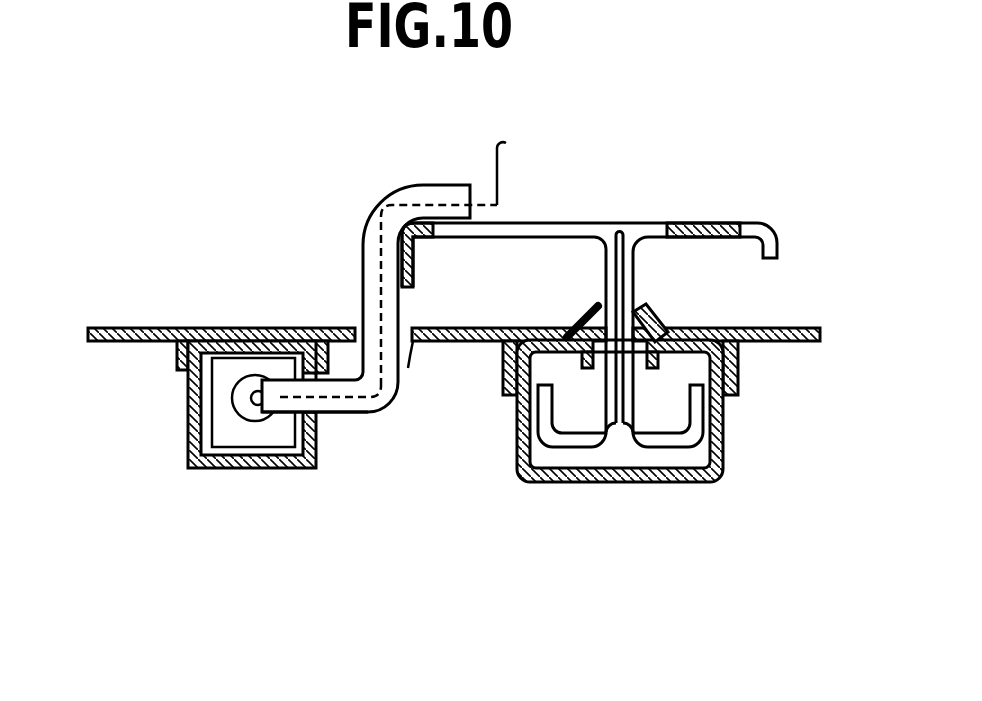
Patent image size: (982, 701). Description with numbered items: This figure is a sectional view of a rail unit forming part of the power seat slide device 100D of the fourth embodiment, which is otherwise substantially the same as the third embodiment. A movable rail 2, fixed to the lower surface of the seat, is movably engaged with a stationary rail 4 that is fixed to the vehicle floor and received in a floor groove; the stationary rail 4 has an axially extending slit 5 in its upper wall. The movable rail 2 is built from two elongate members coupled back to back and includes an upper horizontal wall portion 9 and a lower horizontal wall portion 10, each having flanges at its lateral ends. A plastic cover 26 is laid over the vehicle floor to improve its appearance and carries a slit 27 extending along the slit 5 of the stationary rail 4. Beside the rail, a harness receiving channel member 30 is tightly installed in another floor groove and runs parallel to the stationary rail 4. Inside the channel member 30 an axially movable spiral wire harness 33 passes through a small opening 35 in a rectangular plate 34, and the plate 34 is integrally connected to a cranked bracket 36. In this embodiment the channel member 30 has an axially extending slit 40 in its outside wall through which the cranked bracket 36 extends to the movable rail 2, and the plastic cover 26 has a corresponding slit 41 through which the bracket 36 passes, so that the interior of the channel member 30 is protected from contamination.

The power seat slide device 100D is at (803, 75).
The movable rail 2 is at (722, 218).
The stationary rail 4 is at (732, 450).
The slit 5 is at (650, 347).
The upper horizontal wall portion 9 is at (677, 222).
The lower horizontal wall portion 10 is at (647, 448).
The plastic cover 26 is at (118, 328).
The slit 27 is at (607, 296).
The harness receiving channel member 30 is at (180, 433).
The wire harness 33 is at (268, 423).
The rectangular plate 34 is at (230, 433).
The small opening 35 is at (236, 388).
The cranked bracket 36 is at (350, 228).
The slit 40 is at (317, 421).
The slit 41 is at (410, 337).